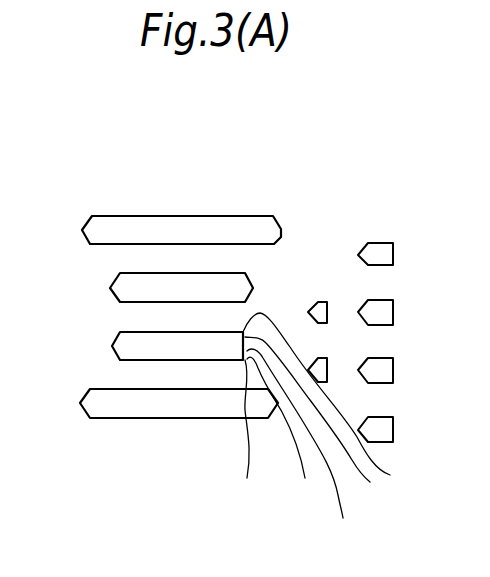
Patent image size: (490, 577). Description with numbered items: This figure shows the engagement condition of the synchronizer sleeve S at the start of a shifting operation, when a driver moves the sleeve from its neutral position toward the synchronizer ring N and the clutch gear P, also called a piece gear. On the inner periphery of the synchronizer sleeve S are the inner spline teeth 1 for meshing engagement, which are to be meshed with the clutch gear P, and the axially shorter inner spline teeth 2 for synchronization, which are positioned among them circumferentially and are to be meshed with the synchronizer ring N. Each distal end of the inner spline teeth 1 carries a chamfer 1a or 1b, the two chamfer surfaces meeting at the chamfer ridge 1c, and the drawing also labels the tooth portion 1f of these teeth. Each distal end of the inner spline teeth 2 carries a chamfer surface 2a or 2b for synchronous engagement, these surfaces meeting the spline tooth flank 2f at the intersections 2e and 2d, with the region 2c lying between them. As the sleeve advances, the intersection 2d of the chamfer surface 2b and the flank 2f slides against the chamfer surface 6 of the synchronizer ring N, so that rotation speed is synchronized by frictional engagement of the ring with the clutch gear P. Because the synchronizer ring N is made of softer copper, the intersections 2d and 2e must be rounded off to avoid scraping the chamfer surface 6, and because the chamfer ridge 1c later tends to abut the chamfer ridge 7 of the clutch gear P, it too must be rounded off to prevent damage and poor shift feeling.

The inner spline teeth for meshing engagement 1 is at (112, 230).
The chamfer for meshing engagement 1a is at (282, 234).
The chamfer for meshing engagement 1b is at (283, 245).
The chamfer ridge 1c is at (282, 237).
The flange of first electrode 1f is at (65, 262).
The inner spline teeth for synchronization 2 is at (125, 350).
The chamfer surface for synchronous engagement 2a is at (320, 428).
The chamfer surface for synchronous engagement 2b is at (286, 438).
The lead wire of second electrode 2c is at (303, 449).
The intersection of chamfer surface and spline tooth flank 2d is at (248, 439).
The intersection of chamfer surface and spline tooth flank 2e is at (337, 405).
The spline tooth flank 2f is at (138, 478).
The chamfer surface of synchronizer ring 6 is at (310, 303).
The chamfer ridge of clutch gear 7 is at (358, 255).
The clutch gear P is at (383, 254).
The synchronizer ring N is at (325, 312).
The synchronizer sleeve S is at (150, 197).